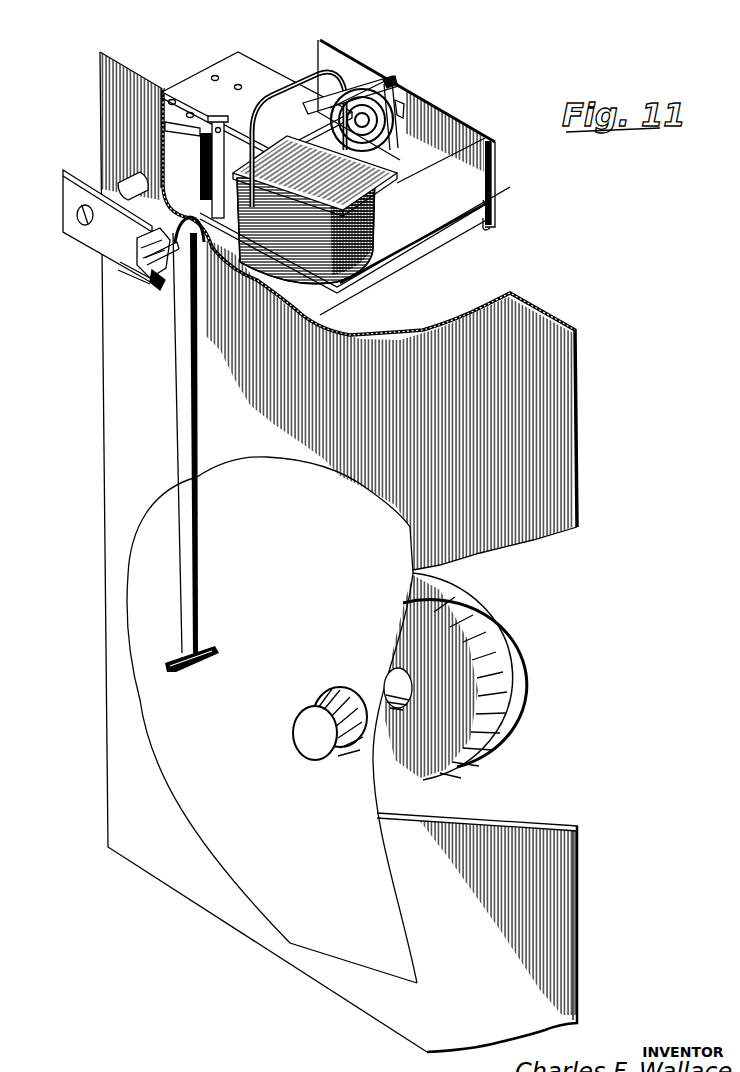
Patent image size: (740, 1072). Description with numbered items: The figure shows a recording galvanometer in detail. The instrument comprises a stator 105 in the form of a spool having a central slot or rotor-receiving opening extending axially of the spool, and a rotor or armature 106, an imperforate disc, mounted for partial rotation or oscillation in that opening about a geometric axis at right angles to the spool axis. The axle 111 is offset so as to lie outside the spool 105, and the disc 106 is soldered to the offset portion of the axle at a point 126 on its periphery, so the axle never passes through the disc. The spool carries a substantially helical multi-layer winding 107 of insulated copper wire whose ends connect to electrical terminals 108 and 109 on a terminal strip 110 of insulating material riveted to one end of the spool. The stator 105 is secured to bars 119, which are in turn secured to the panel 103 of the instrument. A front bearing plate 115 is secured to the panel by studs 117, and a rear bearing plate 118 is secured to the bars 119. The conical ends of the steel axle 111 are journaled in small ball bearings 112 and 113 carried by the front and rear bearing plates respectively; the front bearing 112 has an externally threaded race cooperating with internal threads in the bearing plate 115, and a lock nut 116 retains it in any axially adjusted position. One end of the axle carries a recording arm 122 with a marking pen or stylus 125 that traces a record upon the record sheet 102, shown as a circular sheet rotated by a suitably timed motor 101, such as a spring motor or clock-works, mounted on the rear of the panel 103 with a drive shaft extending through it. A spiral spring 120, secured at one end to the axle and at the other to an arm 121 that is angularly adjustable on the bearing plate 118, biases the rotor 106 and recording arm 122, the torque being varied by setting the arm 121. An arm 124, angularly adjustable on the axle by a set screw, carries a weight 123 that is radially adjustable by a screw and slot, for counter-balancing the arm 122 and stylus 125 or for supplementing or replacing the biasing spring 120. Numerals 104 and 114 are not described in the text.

The motor 101 is at (490, 660).
The record sheet 102 is at (318, 936).
The panel 103 is at (553, 880).
The side plate 104 is at (413, 106).
The stator 105 is at (383, 248).
The rotor 106 is at (262, 103).
The winding 107 is at (263, 230).
The electrical terminal 108 is at (172, 100).
The electrical terminal 109 is at (215, 75).
The terminal strip 110 is at (187, 80).
The axle 111 is at (303, 103).
The front ball bearing 112 is at (143, 245).
The rear ball bearing 113 is at (400, 112).
The pin 114 is at (160, 280).
The front bearing plate 115 is at (62, 203).
The lock nut 116 is at (157, 260).
The stud 117 is at (120, 182).
The rear bearing plate 118 is at (496, 167).
The bars 119 is at (322, 100).
The spiral spring 120 is at (488, 139).
The arm 121 is at (387, 82).
The recording arm 122 is at (173, 360).
The weight 123 is at (218, 118).
The arm 124 is at (187, 128).
The stylus 125 is at (217, 648).
The point 126 is at (315, 176).